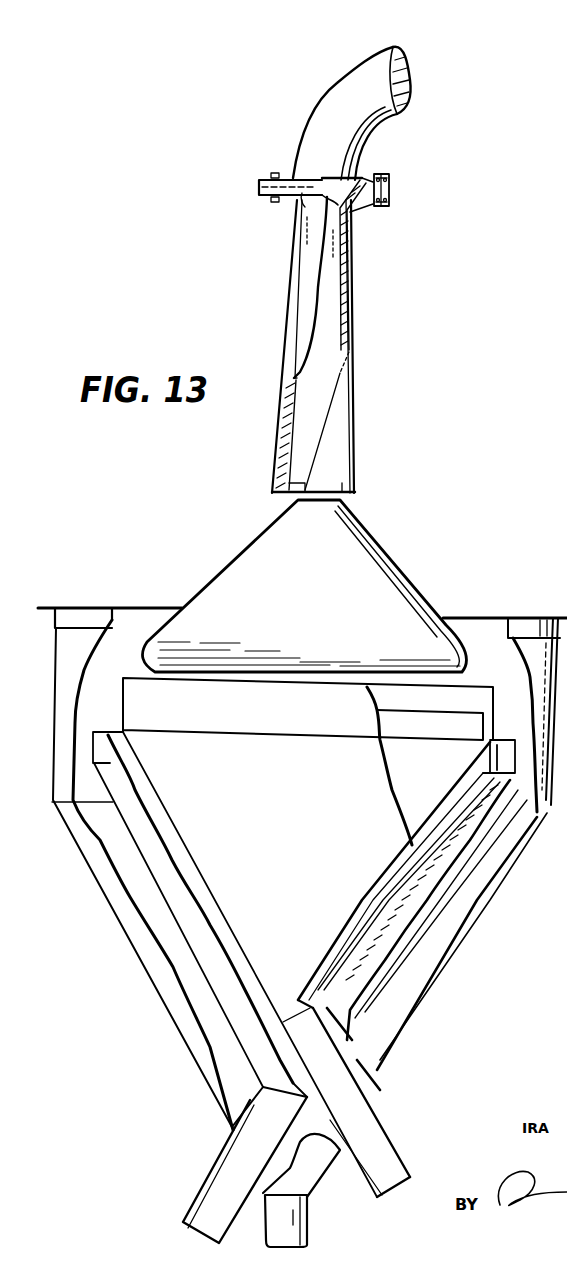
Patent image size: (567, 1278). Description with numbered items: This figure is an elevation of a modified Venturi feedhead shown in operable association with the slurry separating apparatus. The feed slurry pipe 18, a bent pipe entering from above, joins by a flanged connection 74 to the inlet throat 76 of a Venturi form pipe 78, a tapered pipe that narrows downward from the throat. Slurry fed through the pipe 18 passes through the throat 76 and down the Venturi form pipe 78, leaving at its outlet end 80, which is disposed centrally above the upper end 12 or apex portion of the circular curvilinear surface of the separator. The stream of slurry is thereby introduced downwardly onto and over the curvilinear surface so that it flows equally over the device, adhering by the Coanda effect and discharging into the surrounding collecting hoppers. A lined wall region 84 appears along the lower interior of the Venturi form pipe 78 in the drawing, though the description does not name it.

The upper end 12 is at (372, 575).
The feed slurry pipe 18 is at (307, 127).
The flanged connection 74 is at (265, 186).
The inlet throat 76 is at (328, 208).
The Venturi form pipe 78 is at (352, 353).
The outlet end 80 is at (355, 485).
The spout liner wall 84 is at (294, 413).